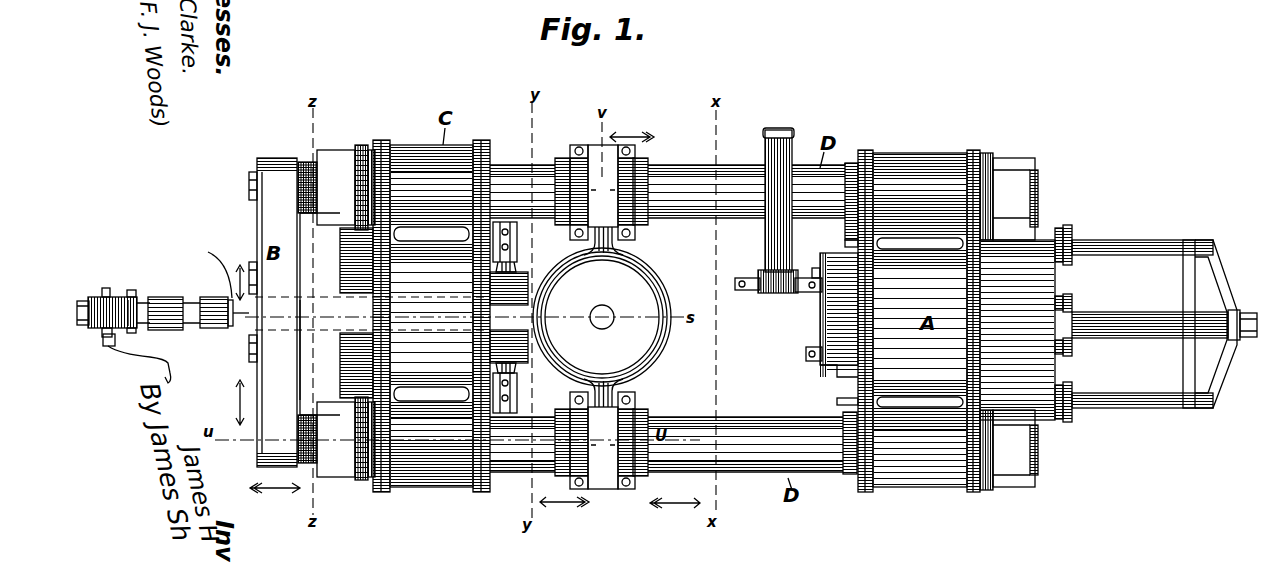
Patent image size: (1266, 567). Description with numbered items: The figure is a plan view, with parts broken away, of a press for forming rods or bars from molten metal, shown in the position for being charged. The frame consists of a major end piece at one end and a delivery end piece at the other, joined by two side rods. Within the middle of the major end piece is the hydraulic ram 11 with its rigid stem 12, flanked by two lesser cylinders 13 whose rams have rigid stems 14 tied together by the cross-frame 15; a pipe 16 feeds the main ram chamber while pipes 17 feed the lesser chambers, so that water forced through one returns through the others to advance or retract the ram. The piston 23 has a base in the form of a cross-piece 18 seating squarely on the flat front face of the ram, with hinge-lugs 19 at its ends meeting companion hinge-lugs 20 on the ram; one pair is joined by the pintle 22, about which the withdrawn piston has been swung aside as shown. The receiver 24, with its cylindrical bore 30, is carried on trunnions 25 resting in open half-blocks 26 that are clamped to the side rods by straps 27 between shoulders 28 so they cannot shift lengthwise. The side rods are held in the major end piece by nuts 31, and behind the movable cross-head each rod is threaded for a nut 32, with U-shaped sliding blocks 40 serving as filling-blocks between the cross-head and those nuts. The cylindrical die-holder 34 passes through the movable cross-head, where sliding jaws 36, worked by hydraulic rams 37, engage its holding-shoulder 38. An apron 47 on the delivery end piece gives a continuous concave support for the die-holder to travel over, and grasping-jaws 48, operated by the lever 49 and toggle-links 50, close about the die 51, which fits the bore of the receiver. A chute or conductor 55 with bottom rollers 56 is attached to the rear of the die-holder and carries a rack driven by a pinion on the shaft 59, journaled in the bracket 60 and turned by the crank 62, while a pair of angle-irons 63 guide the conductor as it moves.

The hydraulic ram 11 is at (822, 374).
The rigid stem 12 is at (1134, 312).
The lesser cylinder 13 is at (1058, 226).
The rigid stem 14 is at (1165, 240).
The cross-frame 15 is at (1238, 291).
The pipe 16 is at (1090, 318).
The pipe 17 is at (845, 243).
The cross-piece 18 is at (772, 294).
The hinge-lug 19 is at (745, 291).
The companion hinge-lug 20 is at (814, 272).
The bolt or pintle 22 is at (812, 292).
The piston 23 is at (765, 152).
The receiver 24 is at (602, 317).
The trunnion 25 is at (627, 249).
The half-block 26 is at (597, 148).
The strap 27 is at (570, 160).
The shoulder 28 is at (555, 165).
The cylindrical bore 30 is at (606, 329).
The nut 31 is at (1015, 322).
The nut 32 is at (336, 313).
The die-holder 34 is at (208, 297).
The sliding jaw 36 is at (528, 284).
The hydraulic ram 37 is at (517, 243).
The holding-shoulder 38 is at (184, 329).
The sliding block 40 is at (343, 272).
The apron or guide 47 is at (318, 350).
The grasping-jaw 48 is at (250, 264).
The lever 49 is at (250, 237).
The toggle-link 50 is at (250, 319).
The die 51 is at (207, 269).
The chute or conductor 55 is at (151, 301).
The bottom roller 56 is at (130, 314).
The shaft 59 is at (106, 341).
The bracket 60 is at (118, 297).
The crank 62 is at (138, 357).
The angle-iron 63 is at (86, 299).